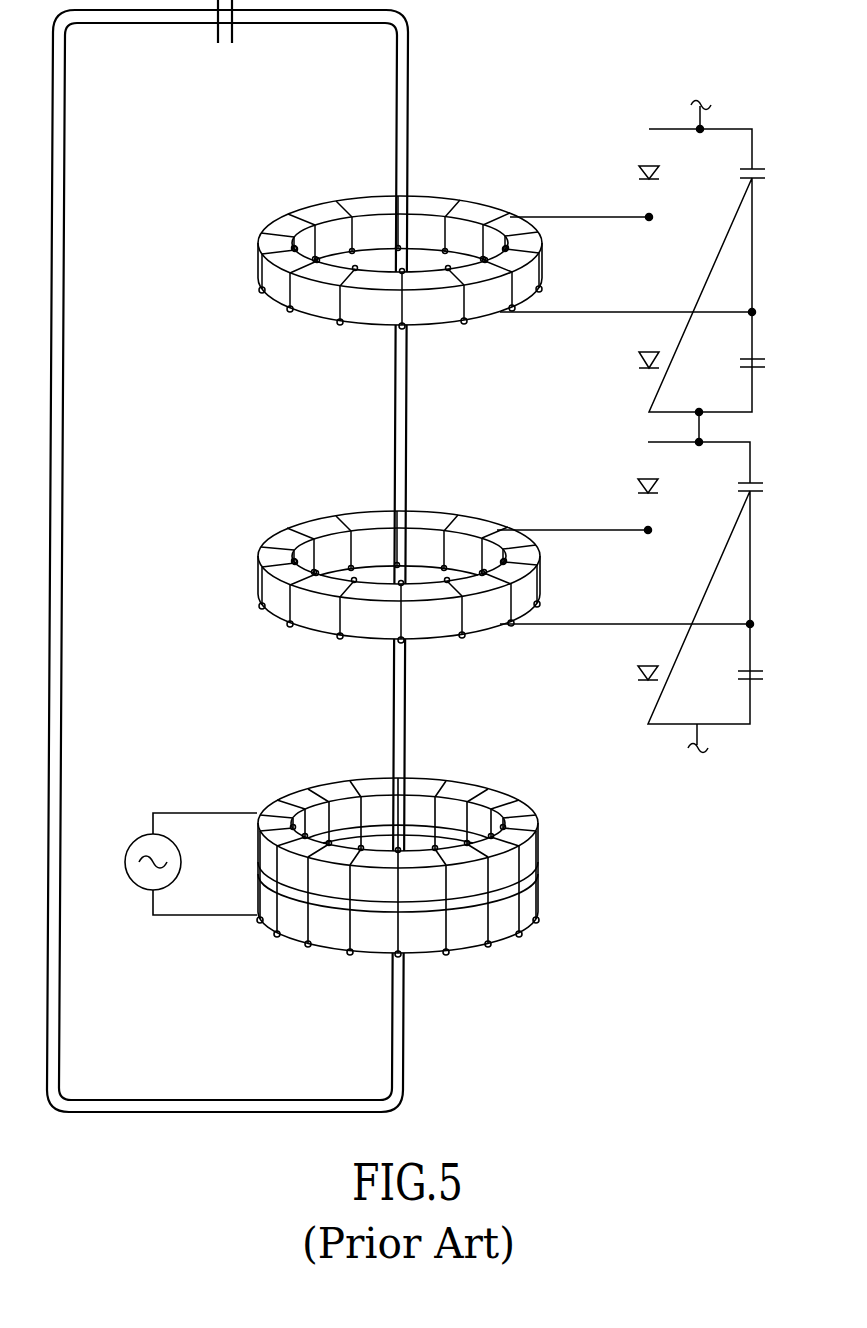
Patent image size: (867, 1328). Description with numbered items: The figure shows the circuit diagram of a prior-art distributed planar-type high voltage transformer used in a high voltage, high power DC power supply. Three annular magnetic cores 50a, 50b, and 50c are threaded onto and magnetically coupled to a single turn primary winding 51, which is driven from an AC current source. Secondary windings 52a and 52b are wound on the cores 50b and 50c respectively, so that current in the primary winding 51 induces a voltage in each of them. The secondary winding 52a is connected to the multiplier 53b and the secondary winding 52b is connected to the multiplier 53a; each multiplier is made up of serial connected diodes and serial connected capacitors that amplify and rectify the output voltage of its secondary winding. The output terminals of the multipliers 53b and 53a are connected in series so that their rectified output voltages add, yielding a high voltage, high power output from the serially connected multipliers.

The annular magnetic core 50a is at (465, 945).
The annular magnetic core 50b is at (458, 625).
The annular magnetic core 50c is at (460, 312).
The single turn primary winding 51 is at (408, 82).
The secondary winding 52a is at (493, 522).
The secondary winding 52b is at (498, 210).
The multiplier 53a is at (702, 272).
The multiplier 53b is at (700, 596).